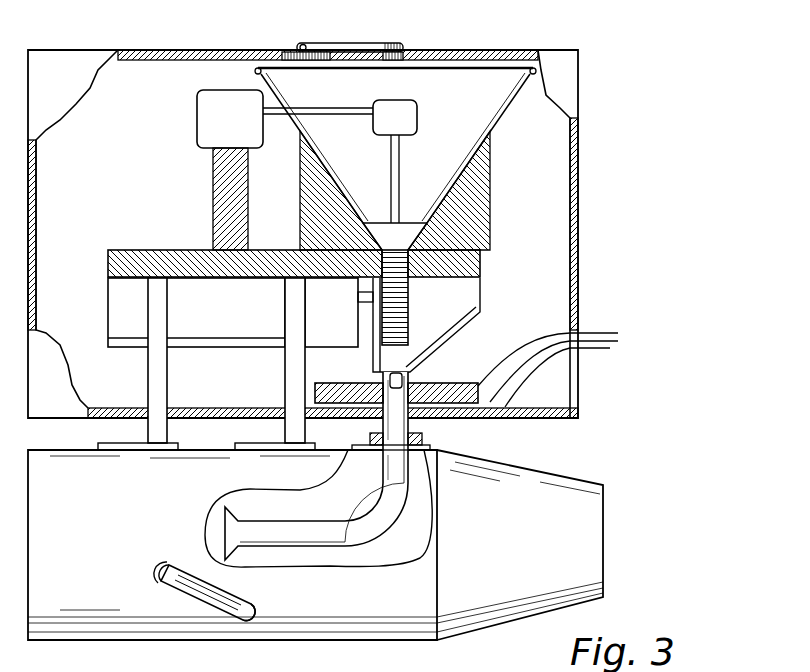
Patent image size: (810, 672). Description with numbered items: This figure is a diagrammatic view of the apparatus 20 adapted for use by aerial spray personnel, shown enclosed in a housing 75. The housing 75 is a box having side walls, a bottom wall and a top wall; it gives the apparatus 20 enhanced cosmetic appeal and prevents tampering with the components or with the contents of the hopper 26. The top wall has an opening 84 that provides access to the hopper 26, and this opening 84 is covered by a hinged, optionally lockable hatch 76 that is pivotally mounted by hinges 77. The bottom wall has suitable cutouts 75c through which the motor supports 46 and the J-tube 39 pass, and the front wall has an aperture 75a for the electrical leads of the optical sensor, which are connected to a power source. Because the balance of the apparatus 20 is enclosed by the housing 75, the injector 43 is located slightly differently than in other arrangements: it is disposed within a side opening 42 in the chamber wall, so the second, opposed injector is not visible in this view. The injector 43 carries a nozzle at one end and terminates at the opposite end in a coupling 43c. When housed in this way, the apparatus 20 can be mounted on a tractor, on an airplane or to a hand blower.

The apparatus 20 is at (618, 113).
The hopper 26 is at (497, 122).
The J-tube 39 is at (368, 533).
The opening 42 is at (160, 578).
The injector 43 is at (193, 593).
The coupling 43c is at (252, 610).
The motor support 46 is at (167, 428).
The housing 75 is at (645, 258).
The aperture 75a is at (575, 348).
The cutout 75c is at (410, 421).
The hatch 76 is at (366, 43).
The hinge 77 is at (295, 46).
The opening 84 is at (383, 60).